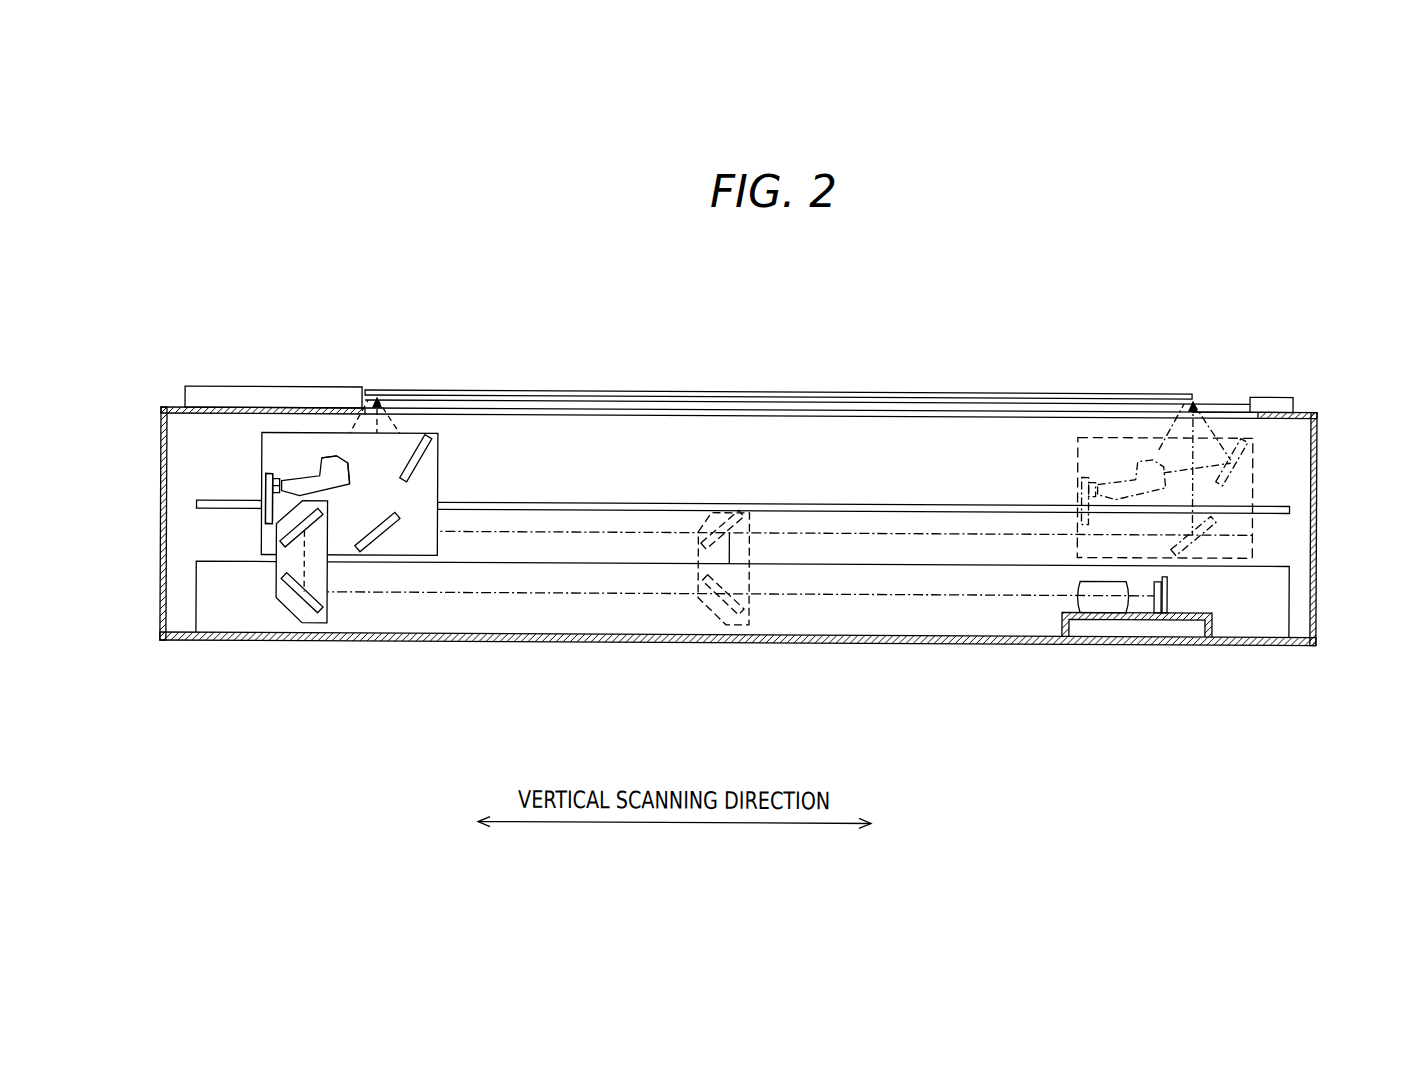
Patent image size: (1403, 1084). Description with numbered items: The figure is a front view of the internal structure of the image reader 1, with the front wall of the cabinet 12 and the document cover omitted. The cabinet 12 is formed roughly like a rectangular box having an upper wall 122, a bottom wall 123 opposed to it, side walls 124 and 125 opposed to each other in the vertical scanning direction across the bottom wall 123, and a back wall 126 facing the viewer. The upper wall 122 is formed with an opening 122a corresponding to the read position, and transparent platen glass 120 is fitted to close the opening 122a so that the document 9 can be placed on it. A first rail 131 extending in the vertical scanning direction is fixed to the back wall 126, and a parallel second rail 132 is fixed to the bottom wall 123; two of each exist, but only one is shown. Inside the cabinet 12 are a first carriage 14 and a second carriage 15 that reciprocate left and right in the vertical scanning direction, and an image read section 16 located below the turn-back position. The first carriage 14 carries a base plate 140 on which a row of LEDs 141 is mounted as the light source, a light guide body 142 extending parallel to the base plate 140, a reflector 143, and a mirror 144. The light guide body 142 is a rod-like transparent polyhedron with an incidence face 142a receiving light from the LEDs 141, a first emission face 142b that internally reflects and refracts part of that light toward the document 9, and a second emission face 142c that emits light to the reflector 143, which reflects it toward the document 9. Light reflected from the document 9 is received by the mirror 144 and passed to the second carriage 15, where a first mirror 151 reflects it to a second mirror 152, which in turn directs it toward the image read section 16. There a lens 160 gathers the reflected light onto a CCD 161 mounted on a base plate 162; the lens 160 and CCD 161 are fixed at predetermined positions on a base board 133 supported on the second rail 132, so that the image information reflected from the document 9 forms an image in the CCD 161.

The image reader 1 is at (1152, 285).
The document 9 is at (690, 389).
The cabinet 12 is at (1317, 438).
The first carriage 14 is at (438, 477).
The second carriage 15 is at (317, 622).
The image read section 16 is at (1022, 693).
The platen glass 120 is at (1210, 425).
The upper wall 122 is at (1298, 407).
The opening 122a is at (1208, 412).
The bottom wall 123 is at (592, 640).
The side wall 124 is at (162, 571).
The side wall 125 is at (1317, 492).
The back wall 126 is at (823, 427).
The first rail 131 is at (1282, 507).
The second rail 132 is at (1283, 605).
The base board 133 is at (1210, 637).
The base plate 140 is at (264, 482).
The LEDs 141 is at (269, 472).
The light guide body 142 is at (308, 475).
The incidence face 142a is at (277, 484).
The first emission face 142b is at (333, 457).
The second emission face 142c is at (350, 458).
The reflector 143 is at (430, 436).
The mirror 144 is at (385, 538).
The first mirror 151 is at (287, 543).
The second mirror 152 is at (303, 598).
The lens 160 is at (1083, 588).
The CCD 161 is at (1160, 603).
The base plate 162 is at (1170, 580).